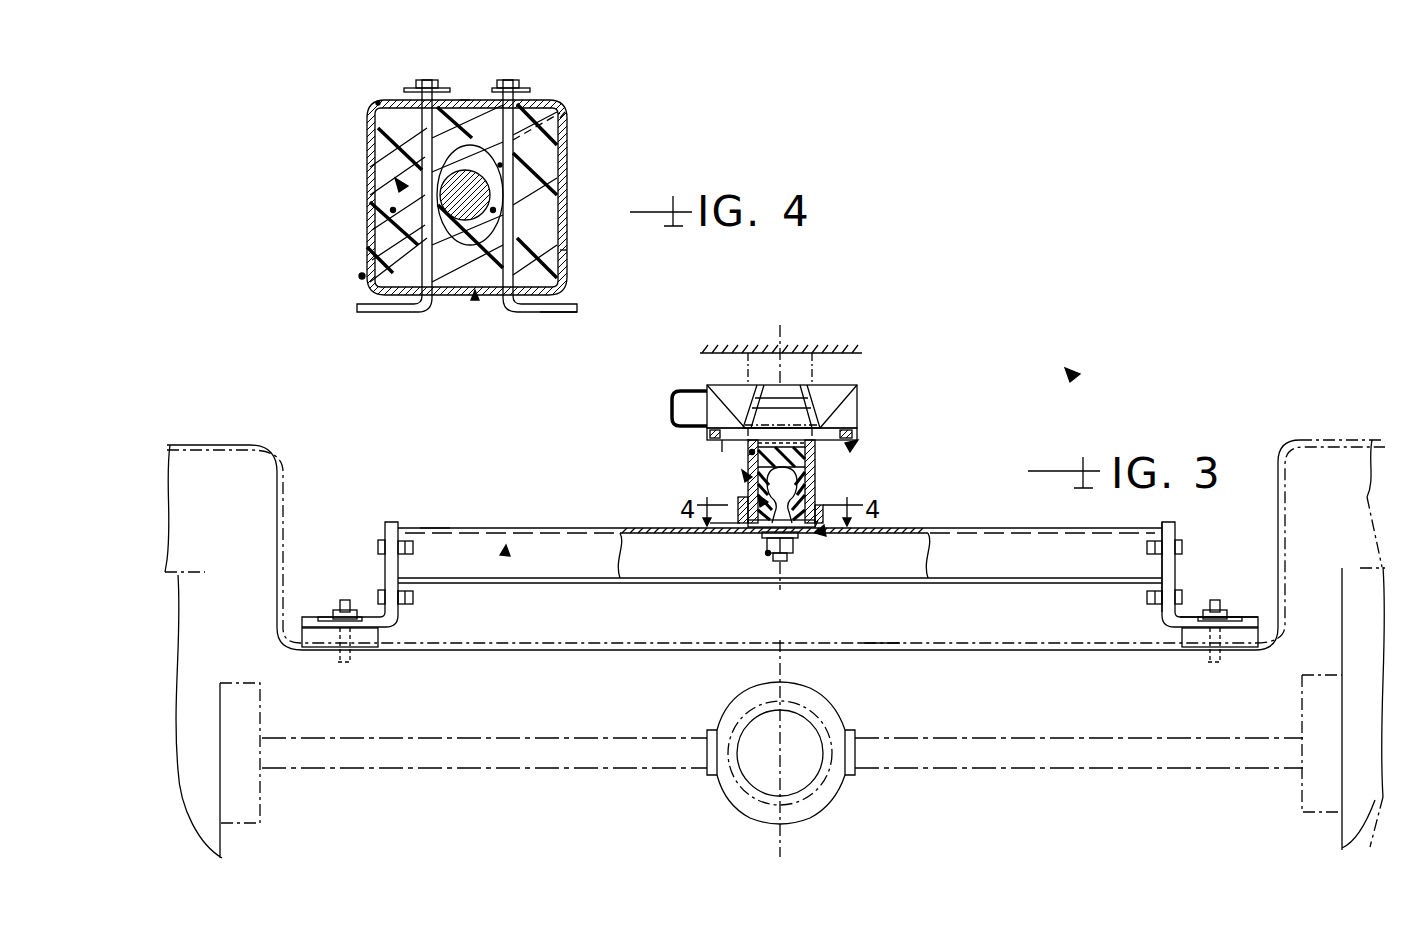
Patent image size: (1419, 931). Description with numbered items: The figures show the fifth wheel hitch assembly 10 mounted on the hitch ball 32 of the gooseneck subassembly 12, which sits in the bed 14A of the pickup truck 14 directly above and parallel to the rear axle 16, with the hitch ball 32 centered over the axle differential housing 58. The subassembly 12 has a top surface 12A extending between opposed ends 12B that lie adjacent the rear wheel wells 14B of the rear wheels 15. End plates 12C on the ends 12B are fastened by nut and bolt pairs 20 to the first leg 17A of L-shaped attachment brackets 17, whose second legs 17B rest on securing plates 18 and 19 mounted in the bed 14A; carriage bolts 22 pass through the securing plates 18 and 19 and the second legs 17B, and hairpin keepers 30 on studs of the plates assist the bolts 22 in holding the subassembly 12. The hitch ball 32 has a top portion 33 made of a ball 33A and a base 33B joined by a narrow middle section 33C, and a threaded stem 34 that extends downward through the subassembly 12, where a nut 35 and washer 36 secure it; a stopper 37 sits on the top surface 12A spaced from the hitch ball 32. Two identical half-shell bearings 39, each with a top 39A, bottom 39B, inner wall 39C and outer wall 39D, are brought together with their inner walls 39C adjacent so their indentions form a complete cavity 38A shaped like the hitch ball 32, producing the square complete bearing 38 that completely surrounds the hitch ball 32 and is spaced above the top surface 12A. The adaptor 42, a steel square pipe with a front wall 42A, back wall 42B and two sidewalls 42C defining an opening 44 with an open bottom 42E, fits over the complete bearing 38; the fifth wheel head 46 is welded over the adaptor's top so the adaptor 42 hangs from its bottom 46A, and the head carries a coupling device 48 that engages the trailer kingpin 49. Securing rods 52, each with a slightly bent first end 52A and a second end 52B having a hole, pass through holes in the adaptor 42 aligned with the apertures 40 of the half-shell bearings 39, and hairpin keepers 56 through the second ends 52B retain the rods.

In FIG. 3, the fifth wheel hitch assembly 10 is at (1072, 376).
In FIG. 3, the gooseneck subassembly 12 is at (540, 542).
In FIG. 3, the top surface 12A is at (505, 552).
In FIG. 3, the opposed ends 12B is at (435, 527).
In FIG. 3, the end plates 12C is at (400, 615).
In FIG. 3, the pickup truck 14 is at (205, 470).
In FIG. 3, the bed 14A is at (860, 642).
In FIG. 3, the rear wheel wells 14B is at (250, 440).
In FIG. 3, the rear wheels 15 is at (225, 840).
In FIG. 3, the rear axle 16 is at (548, 753).
In FIG. 3, the L-shaped attachment brackets 17 is at (1167, 628).
In FIG. 3, the first leg 17A is at (1175, 517).
In FIG. 3, the second legs 17B is at (1190, 610).
In FIG. 3, the securing plate 18 is at (363, 632).
In FIG. 3, the securing plate 19 is at (1250, 630).
In FIG. 3, the nut and bolt pairs 20 is at (1182, 545).
In FIG. 3, the carriage bolts 22 is at (343, 603).
In FIG. 3, the hairpin keepers 30 is at (1232, 608).
In FIG. 4, the hitch ball 32 is at (465, 215).
In FIG. 3, the hitch ball 32 is at (812, 483).
In FIG. 3, the top portion 33 is at (814, 492).
In FIG. 3, the ball 33A is at (750, 476).
In FIG. 4, the base 33B is at (565, 112).
In FIG. 3, the base 33B is at (768, 553).
In FIG. 4, the narrow middle section 33C is at (500, 165).
In FIG. 3, the narrow middle section 33C is at (766, 501).
In FIG. 3, the threaded stem 34 is at (773, 560).
In FIG. 3, the nut 35 is at (767, 557).
In FIG. 3, the washer 36 is at (800, 535).
In FIG. 3, the stopper 37 is at (710, 525).
In FIG. 4, the complete bearing 38 is at (555, 172).
In FIG. 3, the complete bearing 38 is at (840, 441).
In FIG. 4, the complete cavity 38A is at (493, 210).
In FIG. 4, the half-shell bearings 39 is at (395, 160).
In FIG. 3, the half-shell bearings 39 is at (827, 430).
In FIG. 3, the top 39A is at (820, 390).
In FIG. 3, the bottom 39B is at (815, 533).
In FIG. 4, the inner wall 39C is at (402, 184).
In FIG. 4, the outer wall 39D is at (362, 276).
In FIG. 3, the aperture 40 is at (815, 505).
In FIG. 4, the adaptor 42 is at (370, 128).
In FIG. 3, the adaptor 42 is at (672, 397).
In FIG. 4, the front wall 42A is at (475, 295).
In FIG. 4, the back wall 42B is at (462, 98).
In FIG. 4, the sidewalls 42C is at (567, 255).
In FIG. 3, the sidewalls 42C is at (900, 530).
In FIG. 3, the open bottom 42E is at (818, 532).
In FIG. 4, the opening 44 is at (378, 103).
In FIG. 3, the opening 44 is at (752, 452).
In FIG. 3, the fifth wheel head 46 is at (828, 385).
In FIG. 3, the bottom 46A is at (852, 450).
In FIG. 3, the coupling device 48 is at (738, 370).
In FIG. 3, the trailer kingpin 49 is at (810, 372).
In FIG. 4, the securing rods 52 is at (568, 273).
In FIG. 4, the first end 52A is at (535, 312).
In FIG. 4, the second end 52B is at (514, 88).
In FIG. 4, the hairpin keepers 56 is at (440, 88).
In FIG. 3, the axle differential housing 58 is at (840, 795).